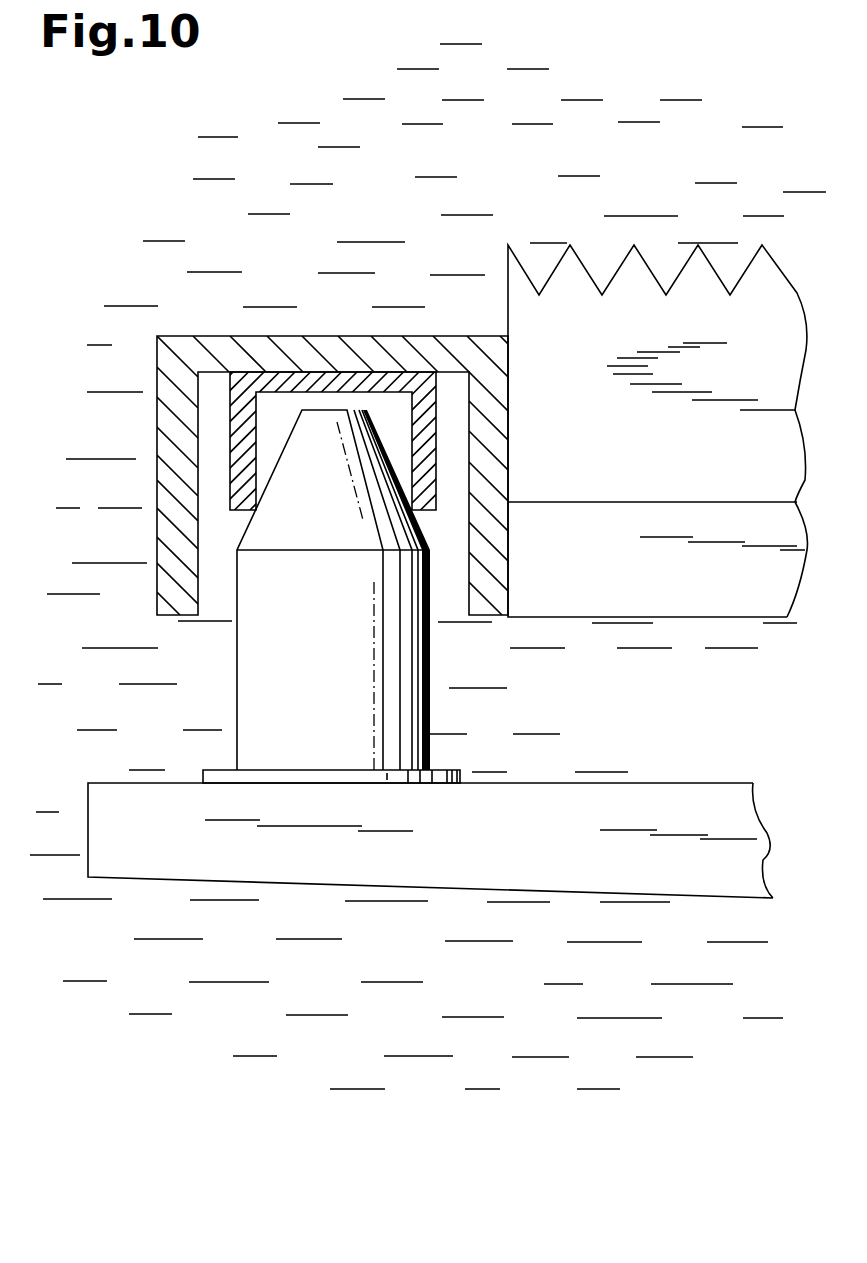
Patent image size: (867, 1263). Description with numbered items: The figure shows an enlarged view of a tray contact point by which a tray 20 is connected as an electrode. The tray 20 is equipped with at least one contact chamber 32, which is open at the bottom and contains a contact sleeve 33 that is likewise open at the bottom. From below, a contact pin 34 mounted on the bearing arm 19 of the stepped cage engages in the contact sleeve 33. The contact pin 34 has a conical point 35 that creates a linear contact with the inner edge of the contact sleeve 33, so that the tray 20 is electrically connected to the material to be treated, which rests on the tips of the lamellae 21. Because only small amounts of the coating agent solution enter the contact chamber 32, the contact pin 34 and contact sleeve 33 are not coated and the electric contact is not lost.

The bearing arm 19 is at (568, 890).
The tray 20 is at (580, 567).
The lamella 21 is at (588, 340).
The contact chamber 32 is at (168, 570).
The contact sleeve 33 is at (242, 385).
The contact pin 34 is at (280, 710).
The conical point 35 is at (346, 425).